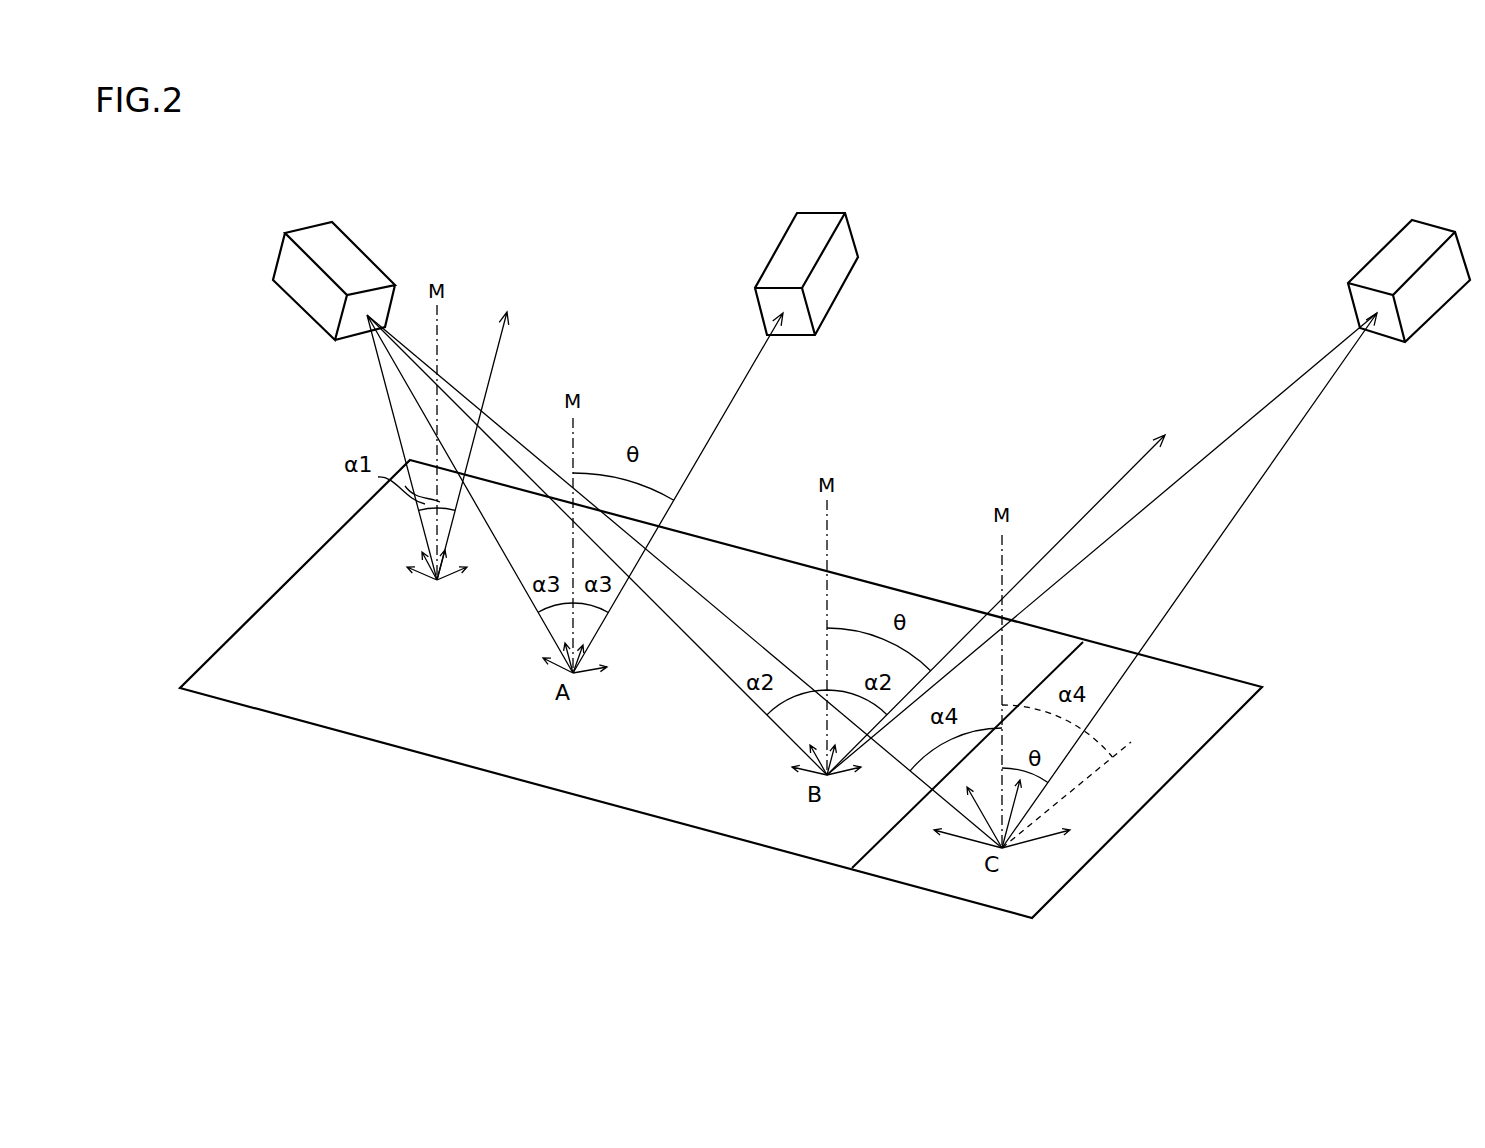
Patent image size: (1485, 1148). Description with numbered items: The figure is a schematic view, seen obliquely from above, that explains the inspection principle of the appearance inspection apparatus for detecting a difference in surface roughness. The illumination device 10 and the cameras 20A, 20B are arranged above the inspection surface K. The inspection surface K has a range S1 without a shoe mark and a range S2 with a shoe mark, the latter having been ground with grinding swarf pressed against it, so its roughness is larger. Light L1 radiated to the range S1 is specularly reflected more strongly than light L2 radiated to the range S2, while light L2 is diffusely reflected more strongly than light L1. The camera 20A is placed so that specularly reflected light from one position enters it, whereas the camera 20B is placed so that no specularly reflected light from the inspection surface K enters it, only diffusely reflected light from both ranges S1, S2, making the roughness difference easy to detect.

The illumination device 10 is at (340, 253).
The camera 20A is at (793, 253).
The camera 20B is at (1400, 252).
The inspection surface K is at (293, 598).
The range without a shoe mark S1 is at (224, 684).
The range with a shoe mark S2 is at (967, 775).
The light L1 is at (380, 370).
The light L2 is at (920, 779).